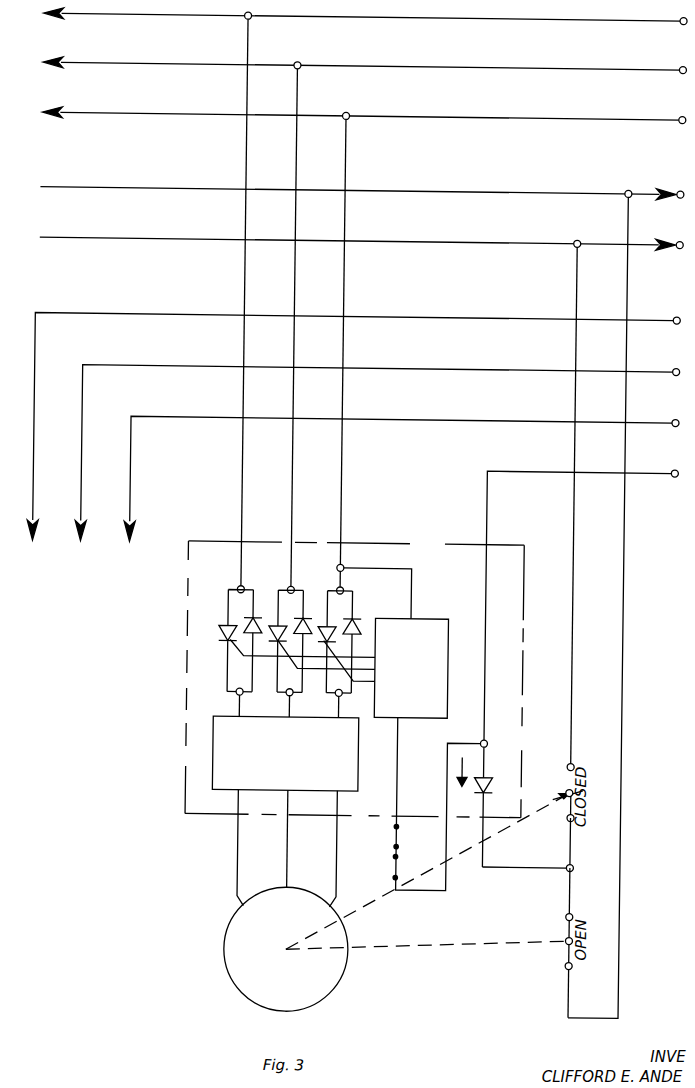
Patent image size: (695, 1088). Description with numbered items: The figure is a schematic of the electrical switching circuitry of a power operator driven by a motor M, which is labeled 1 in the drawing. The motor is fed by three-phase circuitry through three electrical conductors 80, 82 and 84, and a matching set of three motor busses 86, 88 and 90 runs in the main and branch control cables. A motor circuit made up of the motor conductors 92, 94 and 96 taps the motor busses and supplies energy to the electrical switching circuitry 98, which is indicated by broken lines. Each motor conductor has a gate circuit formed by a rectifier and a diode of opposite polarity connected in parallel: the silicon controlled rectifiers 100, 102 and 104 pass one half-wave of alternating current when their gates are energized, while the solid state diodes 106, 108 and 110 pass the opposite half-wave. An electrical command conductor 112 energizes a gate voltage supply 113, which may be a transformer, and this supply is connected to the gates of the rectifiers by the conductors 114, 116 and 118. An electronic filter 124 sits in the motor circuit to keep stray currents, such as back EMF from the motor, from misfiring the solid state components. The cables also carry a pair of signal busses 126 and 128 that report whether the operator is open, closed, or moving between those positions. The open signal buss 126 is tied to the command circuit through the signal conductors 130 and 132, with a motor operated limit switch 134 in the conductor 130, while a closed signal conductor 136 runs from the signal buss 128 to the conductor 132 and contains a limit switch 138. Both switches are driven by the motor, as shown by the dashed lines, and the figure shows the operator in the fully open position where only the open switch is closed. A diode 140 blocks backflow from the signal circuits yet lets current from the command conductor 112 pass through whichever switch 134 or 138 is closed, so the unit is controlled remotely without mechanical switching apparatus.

The motor 1 is at (286, 949).
The electrical conductor 80 is at (242, 830).
The electrical conductor 82 is at (292, 831).
The electrical conductor 84 is at (341, 831).
The motor buss 86 is at (420, 116).
The motor buss 88 is at (420, 66).
The motor buss 90 is at (420, 17).
The motor conductor 92 is at (340, 172).
The motor conductor 94 is at (291, 172).
The motor conductor 96 is at (241, 172).
The electrical switching circuitry 98 is at (428, 562).
The silicon controlled rectifier 100 is at (222, 622).
The silicon controlled rectifier 102 is at (274, 622).
The silicon controlled rectifier 104 is at (324, 622).
The solid state diode 106 is at (233, 589).
The solid state diode 108 is at (299, 617).
The solid state diode 110 is at (356, 630).
The electrical command conductor 112 is at (556, 469).
The gate voltage supply 113 is at (415, 632).
The conductor 114 is at (262, 659).
The conductor 116 is at (316, 671).
The conductor 118 is at (364, 683).
The electronic filter 124 is at (285, 753).
The open signal buss 126 is at (420, 190).
The signal buss 128 is at (420, 241).
The signal conductor 130 is at (622, 727).
The signal conductor 132 is at (547, 867).
The motor operated limit switch 134 is at (570, 950).
The closed signal conductor 136 is at (572, 685).
The limit switch 138 is at (570, 788).
The diode 140 is at (488, 784).